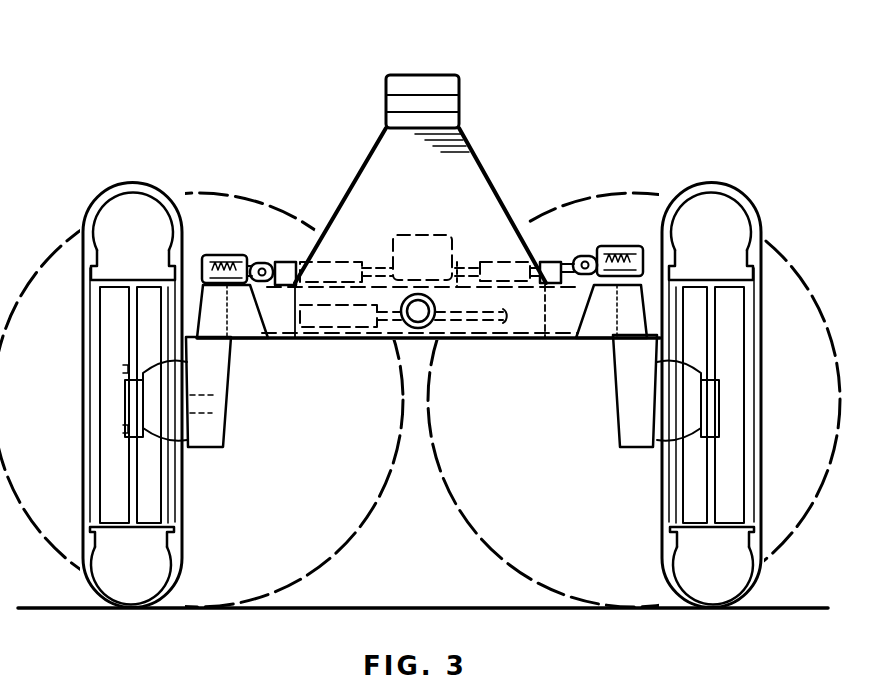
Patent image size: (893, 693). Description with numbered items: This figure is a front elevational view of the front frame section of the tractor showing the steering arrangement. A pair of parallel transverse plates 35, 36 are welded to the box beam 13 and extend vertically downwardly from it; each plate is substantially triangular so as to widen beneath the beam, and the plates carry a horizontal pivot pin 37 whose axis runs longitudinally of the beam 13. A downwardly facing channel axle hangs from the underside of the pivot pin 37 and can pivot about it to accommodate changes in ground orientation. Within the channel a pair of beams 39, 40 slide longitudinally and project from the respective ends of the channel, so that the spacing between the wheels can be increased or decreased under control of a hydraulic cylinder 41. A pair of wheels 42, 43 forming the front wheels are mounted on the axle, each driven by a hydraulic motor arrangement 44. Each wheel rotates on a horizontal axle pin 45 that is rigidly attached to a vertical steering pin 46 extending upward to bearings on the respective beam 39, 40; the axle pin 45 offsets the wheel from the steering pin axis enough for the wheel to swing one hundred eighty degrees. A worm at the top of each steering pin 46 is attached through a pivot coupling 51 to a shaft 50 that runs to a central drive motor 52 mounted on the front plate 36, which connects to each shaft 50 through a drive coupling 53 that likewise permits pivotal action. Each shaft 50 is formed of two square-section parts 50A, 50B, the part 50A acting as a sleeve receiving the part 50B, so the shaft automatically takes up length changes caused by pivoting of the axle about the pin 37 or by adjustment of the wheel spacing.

The box beam 13 is at (414, 75).
The transverse plate 35 is at (374, 165).
The front plate 36 is at (470, 158).
The pivot pin 37 is at (424, 313).
The beam 39 is at (247, 320).
The beam 40 is at (601, 315).
The hydraulic cylinder 41 is at (323, 318).
The wheel 42 is at (98, 205).
The wheel 43 is at (757, 210).
The hydraulic motor arrangement 44 is at (148, 402).
The axle pin 45 is at (213, 396).
The steering pin 46 is at (206, 295).
The shaft 50 is at (553, 258).
The shaft part 50A is at (292, 258).
The shaft part 50B is at (269, 252).
The pivot coupling 51 is at (598, 245).
The central drive motor 52 is at (410, 238).
The drive coupling 53 is at (473, 245).